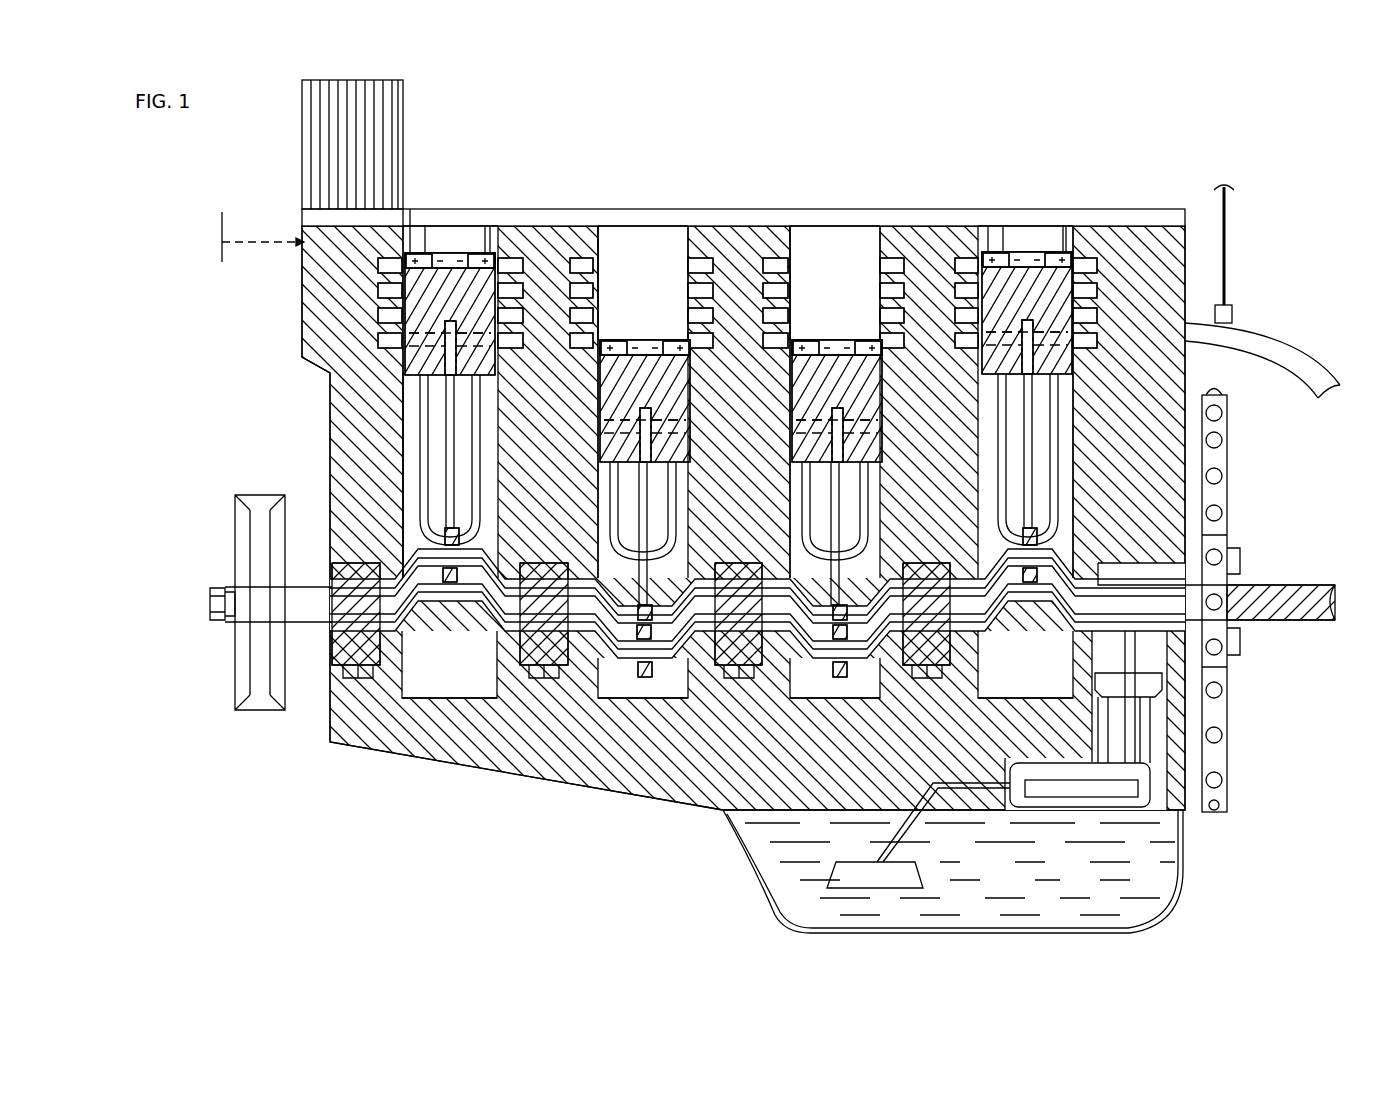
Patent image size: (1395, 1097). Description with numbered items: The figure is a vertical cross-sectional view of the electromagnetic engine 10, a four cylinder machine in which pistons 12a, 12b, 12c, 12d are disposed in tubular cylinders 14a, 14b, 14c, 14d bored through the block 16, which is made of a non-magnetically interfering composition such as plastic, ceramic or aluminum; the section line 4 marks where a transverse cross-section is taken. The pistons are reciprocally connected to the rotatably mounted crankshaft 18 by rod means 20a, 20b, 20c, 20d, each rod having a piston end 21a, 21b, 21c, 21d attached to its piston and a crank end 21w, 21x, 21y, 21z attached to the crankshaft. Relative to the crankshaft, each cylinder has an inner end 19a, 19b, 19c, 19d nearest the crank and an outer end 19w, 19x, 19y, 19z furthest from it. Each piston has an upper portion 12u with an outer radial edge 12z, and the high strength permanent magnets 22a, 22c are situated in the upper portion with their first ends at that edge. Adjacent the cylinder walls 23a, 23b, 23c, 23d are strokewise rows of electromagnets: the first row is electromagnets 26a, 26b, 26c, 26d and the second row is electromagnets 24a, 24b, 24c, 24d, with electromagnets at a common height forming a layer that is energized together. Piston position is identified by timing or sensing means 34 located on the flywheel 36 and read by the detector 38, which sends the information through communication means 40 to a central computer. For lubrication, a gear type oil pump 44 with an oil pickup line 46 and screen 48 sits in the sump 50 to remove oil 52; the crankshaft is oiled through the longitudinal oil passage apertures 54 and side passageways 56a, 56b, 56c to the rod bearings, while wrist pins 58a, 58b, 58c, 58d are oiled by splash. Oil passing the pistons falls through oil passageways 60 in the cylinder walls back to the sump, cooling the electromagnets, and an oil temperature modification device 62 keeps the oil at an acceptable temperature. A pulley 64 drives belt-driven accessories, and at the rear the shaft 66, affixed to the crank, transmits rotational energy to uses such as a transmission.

The section line 4 is at (259, 241).
The electromagnetic engine 10 is at (1218, 164).
The piston 12a is at (430, 250).
The piston 12b is at (610, 340).
The piston 12c is at (802, 340).
The piston 12d is at (1000, 250).
The upper portion 12u is at (678, 330).
The outer radial edge 12z is at (405, 372).
The tubular cylinder 14a is at (445, 252).
The tubular cylinder 14b is at (645, 338).
The tubular cylinder 14c is at (838, 338).
The tubular cylinder 14d is at (1028, 250).
The block 16 is at (352, 528).
The crankshaft 18 is at (445, 625).
The inner end 19a is at (480, 700).
The inner end 19b is at (612, 700).
The inner end 19c is at (802, 700).
The inner end 19d is at (1055, 700).
The outer end 19w is at (410, 226).
The outer end 19x is at (603, 226).
The outer end 19y is at (798, 226).
The outer end 19z is at (985, 226).
The rod means 20a is at (424, 440).
The rod means 20b is at (612, 520).
The rod means 20c is at (804, 515).
The rod means 20d is at (1058, 515).
The piston end 21a is at (452, 330).
The piston end 21b is at (647, 420).
The piston end 21c is at (839, 420).
The piston end 21d is at (1030, 330).
The crank end 21w is at (452, 585).
The crank end 21x is at (645, 680).
The crank end 21y is at (843, 680).
The crank end 21z is at (1028, 600).
The permanent magnet 22a is at (482, 252).
The permanent magnet 22c is at (420, 268).
The cylinder wall 23a is at (440, 410).
The cylinder wall 23b is at (700, 520).
The cylinder wall 23c is at (885, 535).
The cylinder wall 23d is at (1010, 540).
The electromagnet 24a is at (510, 265).
The electromagnet 24b is at (512, 290).
The electromagnet 24c is at (514, 315).
The electromagnet 24d is at (516, 342).
The electromagnet 26a is at (380, 264).
The electromagnet 26b is at (380, 290).
The electromagnet 26c is at (380, 315).
The electromagnet 26d is at (380, 340).
The timing or sensing means 34 is at (1224, 392).
The flywheel 36 is at (1227, 492).
The detector or sensor 38 is at (1232, 314).
The communication means 40 is at (1226, 238).
The gear type oil pump 44 is at (1150, 795).
The oil pickup line 46 is at (900, 830).
The screen 48 is at (875, 875).
The sump 50 is at (760, 880).
The oil 52 is at (960, 869).
The longitudinal oil passage aperture 54 is at (492, 660).
The side passageway 56a is at (462, 540).
The side passageway 56b is at (640, 675).
The side passageway 56c is at (835, 675).
The wrist pin 58a is at (455, 340).
The wrist pin 58b is at (648, 428).
The wrist pin 58c is at (840, 428).
The wrist pin 58d is at (1030, 340).
The oil passageway 60 is at (427, 226).
The oil temperature modification device 62 is at (302, 150).
The pulley 64 is at (262, 710).
The shaft 66 is at (1290, 585).